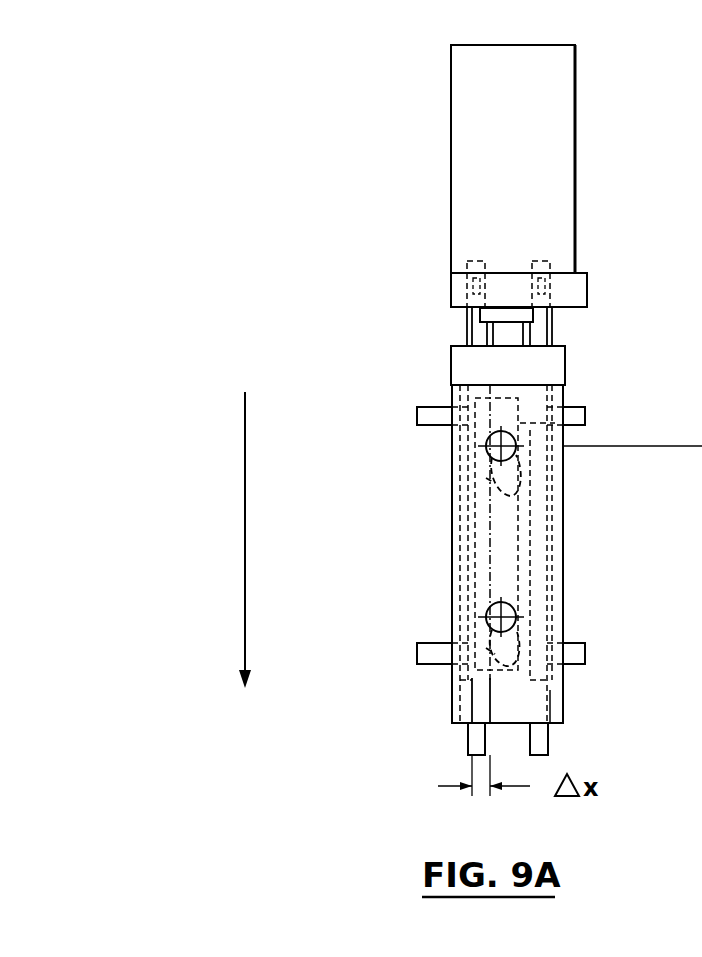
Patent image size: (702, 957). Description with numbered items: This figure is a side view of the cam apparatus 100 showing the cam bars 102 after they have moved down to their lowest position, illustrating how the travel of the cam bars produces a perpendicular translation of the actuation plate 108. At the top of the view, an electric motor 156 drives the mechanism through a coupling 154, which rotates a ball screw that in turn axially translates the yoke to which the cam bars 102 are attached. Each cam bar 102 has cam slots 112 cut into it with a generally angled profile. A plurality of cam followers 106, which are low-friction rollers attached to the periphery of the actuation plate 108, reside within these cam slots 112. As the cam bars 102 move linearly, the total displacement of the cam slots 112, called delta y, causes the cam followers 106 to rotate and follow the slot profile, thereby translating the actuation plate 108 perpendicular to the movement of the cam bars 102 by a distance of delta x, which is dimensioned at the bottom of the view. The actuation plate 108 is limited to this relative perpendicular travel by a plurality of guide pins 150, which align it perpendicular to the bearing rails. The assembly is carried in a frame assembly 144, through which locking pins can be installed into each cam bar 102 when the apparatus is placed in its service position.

The cam apparatus 100 is at (280, 336).
The cam bar 102 is at (525, 552).
The cam follower 106 is at (480, 432).
The actuation plate 108 is at (510, 512).
The cam slot 112 is at (490, 480).
The frame assembly 144 is at (565, 398).
The guide pin 150 is at (420, 407).
The coupling 154 is at (500, 334).
The electric motor 156 is at (562, 160).